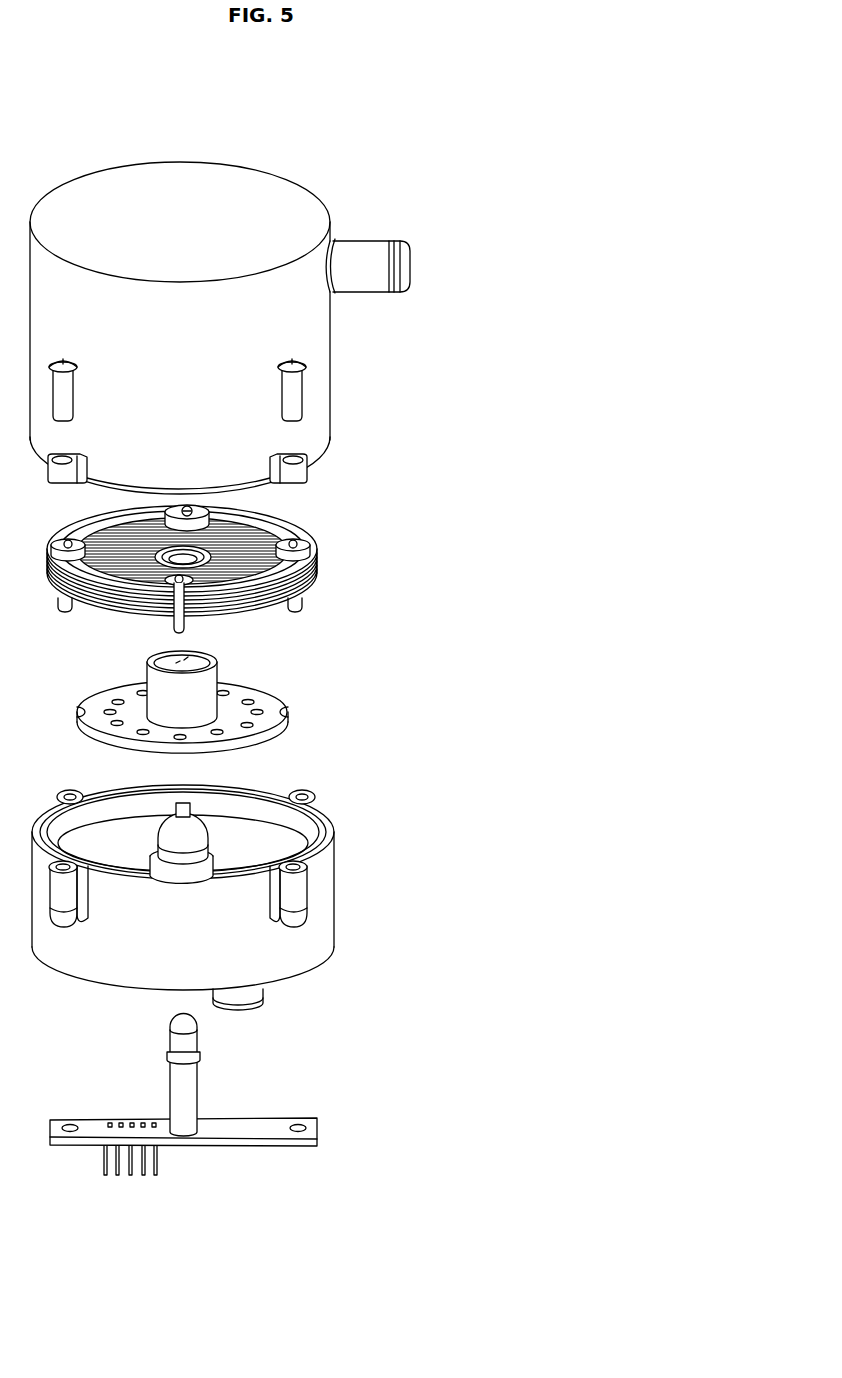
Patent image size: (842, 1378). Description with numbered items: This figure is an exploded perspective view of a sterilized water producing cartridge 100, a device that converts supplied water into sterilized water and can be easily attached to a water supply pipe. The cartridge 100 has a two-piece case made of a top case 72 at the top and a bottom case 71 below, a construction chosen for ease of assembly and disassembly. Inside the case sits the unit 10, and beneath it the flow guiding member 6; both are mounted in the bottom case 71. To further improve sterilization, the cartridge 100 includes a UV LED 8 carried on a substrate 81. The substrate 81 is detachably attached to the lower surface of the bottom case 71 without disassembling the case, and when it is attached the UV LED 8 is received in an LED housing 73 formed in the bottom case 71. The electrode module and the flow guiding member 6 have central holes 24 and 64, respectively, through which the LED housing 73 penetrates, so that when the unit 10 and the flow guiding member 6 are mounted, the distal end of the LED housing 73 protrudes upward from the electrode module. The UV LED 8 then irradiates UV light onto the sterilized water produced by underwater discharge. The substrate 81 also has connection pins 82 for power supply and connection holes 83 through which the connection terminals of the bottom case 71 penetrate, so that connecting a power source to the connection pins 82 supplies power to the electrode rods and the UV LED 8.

The sterilized water producing cartridge 100 is at (370, 196).
The top case 72 is at (335, 380).
The unit 10 is at (240, 565).
The central hole 24 is at (192, 556).
The flow guiding member 6 is at (203, 694).
The central hole 64 is at (190, 662).
The LED housing 73 is at (200, 826).
The bottom case 71 is at (231, 884).
The UV LED 8 is at (198, 1040).
The substrate 81 is at (194, 1138).
The connection pins 82 is at (142, 1172).
The connection holes 83 is at (70, 1125).